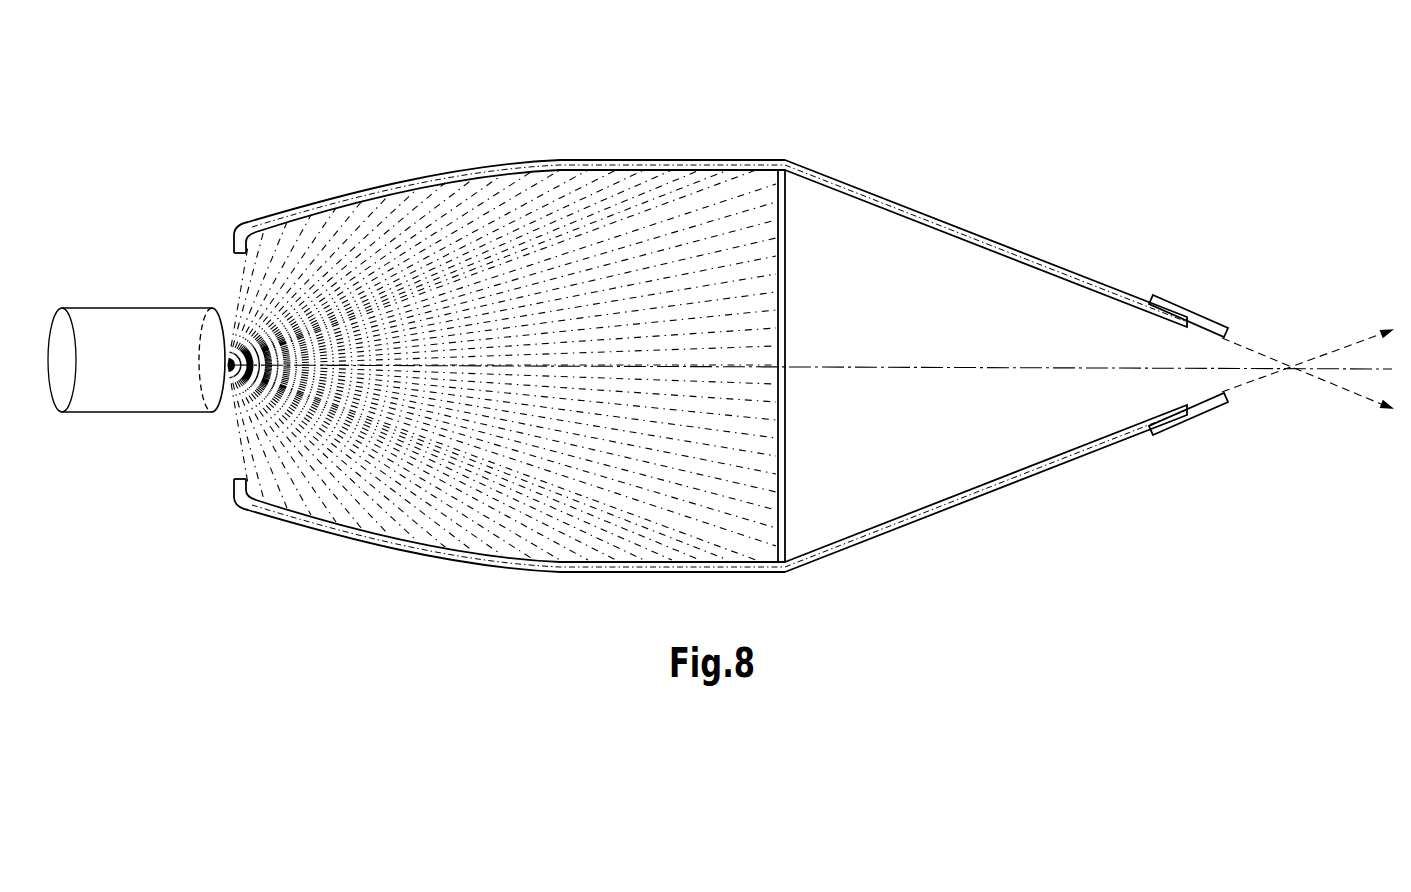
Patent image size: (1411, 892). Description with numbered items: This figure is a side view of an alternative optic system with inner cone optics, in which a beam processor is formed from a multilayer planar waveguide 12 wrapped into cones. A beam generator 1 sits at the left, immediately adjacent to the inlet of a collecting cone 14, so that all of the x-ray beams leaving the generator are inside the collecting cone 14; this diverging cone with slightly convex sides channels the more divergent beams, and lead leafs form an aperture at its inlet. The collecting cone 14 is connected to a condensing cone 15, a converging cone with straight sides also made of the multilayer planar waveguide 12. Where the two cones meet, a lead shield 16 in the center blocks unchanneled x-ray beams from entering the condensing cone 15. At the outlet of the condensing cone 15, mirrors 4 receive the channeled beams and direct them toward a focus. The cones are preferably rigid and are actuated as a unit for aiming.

The beam generator 1 is at (136, 360).
The multilayer planar waveguide 12 is at (862, 186).
The collecting cone 14 is at (506, 366).
The condensing cone 15 is at (810, 366).
The lead shield 16 is at (792, 312).
The mirrors 4 is at (1216, 392).